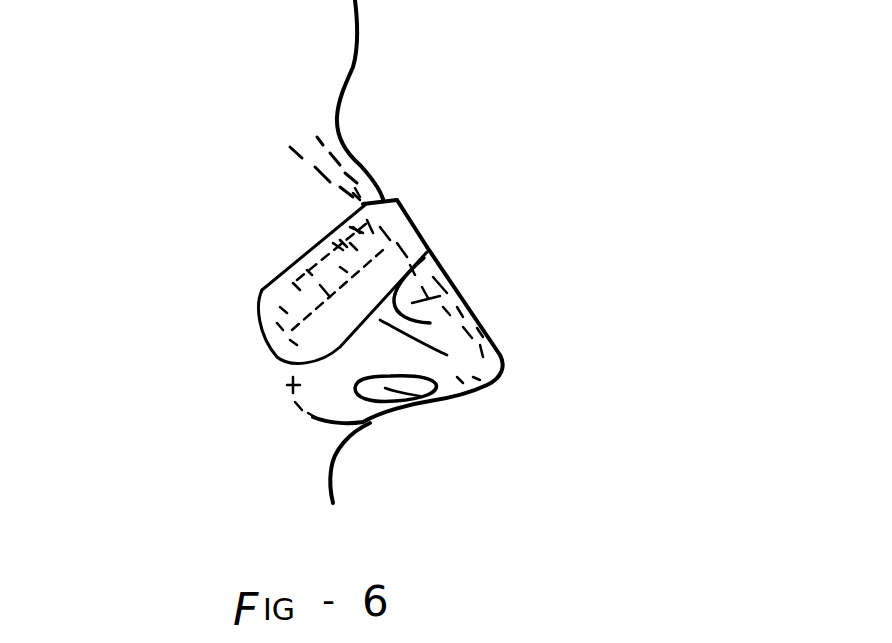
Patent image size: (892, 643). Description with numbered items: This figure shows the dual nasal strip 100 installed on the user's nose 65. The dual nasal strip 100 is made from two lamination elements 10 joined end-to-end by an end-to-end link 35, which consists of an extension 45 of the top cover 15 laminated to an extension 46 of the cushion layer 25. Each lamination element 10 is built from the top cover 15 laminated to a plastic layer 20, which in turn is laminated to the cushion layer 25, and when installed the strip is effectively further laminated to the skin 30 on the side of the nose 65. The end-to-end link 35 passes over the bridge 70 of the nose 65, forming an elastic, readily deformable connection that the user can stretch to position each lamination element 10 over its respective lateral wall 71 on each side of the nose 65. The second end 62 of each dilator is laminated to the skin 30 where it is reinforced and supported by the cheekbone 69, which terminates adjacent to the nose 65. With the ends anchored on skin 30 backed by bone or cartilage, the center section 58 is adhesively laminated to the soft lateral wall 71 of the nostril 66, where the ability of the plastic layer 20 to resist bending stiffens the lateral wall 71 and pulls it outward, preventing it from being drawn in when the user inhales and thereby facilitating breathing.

The lamination element 10 is at (287, 300).
The dual nasal strip 100 is at (307, 283).
The center section 58 is at (340, 282).
The second end 62 is at (270, 320).
The cheekbone 69 is at (280, 372).
The bridge of the nose 70 is at (381, 196).
The top cover 15 is at (400, 205).
The end-to-end link 35 is at (411, 212).
The extension of the top cover 45 is at (418, 222).
The extension of the cushion layer 46 is at (428, 247).
The plastic layer 20 is at (383, 277).
The skin 30 is at (412, 303).
The cushion layer 25 is at (430, 323).
The nose 65 is at (462, 353).
The lateral wall 71 is at (447, 355).
The nostril 66 is at (417, 402).